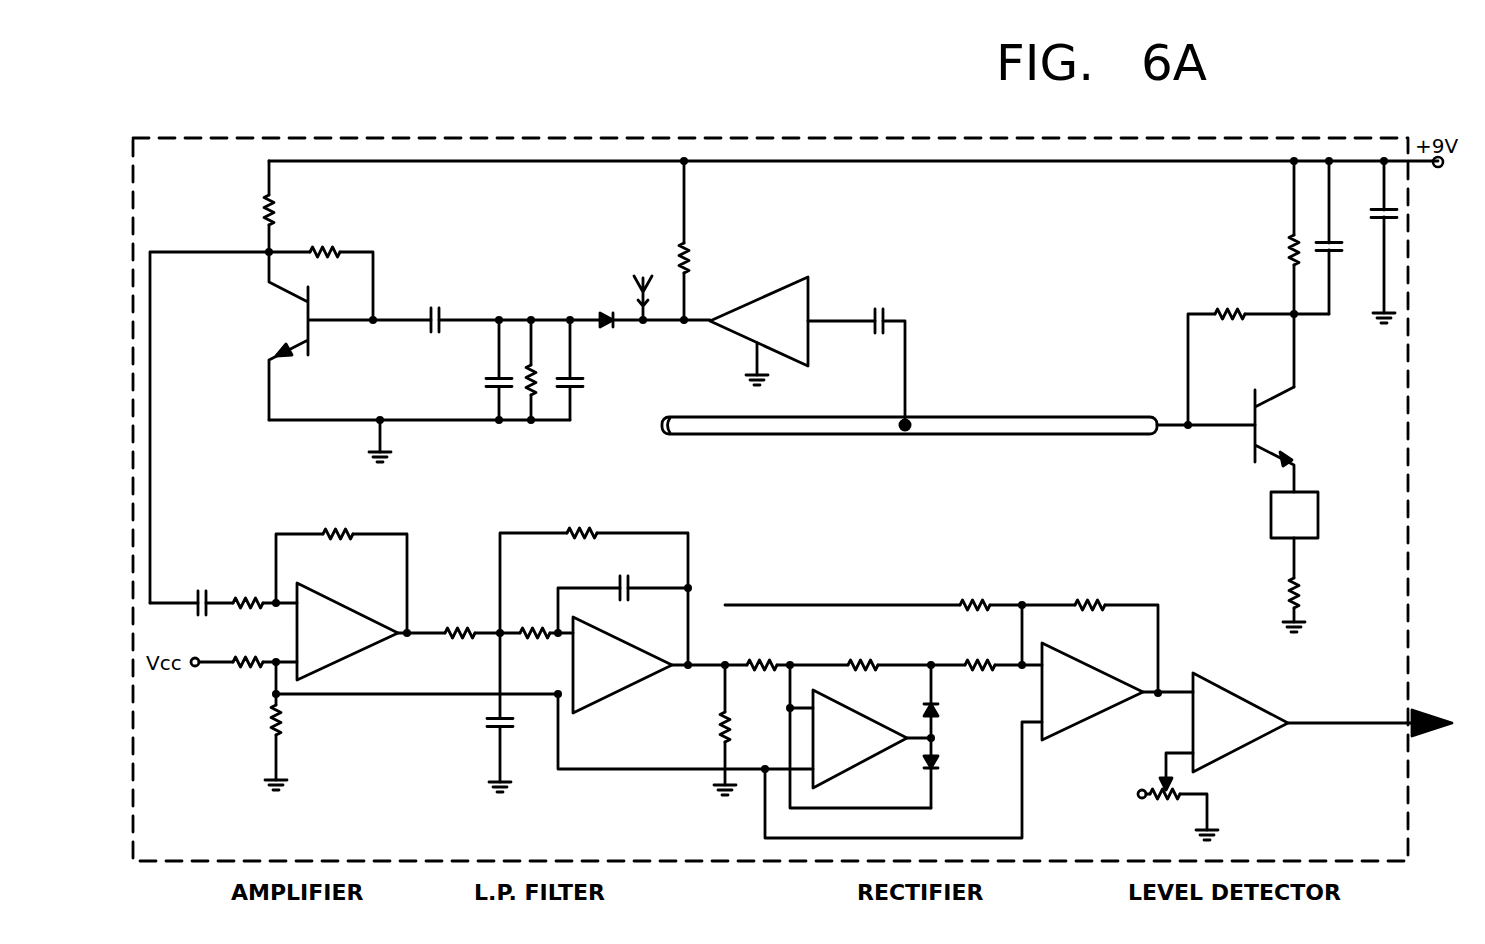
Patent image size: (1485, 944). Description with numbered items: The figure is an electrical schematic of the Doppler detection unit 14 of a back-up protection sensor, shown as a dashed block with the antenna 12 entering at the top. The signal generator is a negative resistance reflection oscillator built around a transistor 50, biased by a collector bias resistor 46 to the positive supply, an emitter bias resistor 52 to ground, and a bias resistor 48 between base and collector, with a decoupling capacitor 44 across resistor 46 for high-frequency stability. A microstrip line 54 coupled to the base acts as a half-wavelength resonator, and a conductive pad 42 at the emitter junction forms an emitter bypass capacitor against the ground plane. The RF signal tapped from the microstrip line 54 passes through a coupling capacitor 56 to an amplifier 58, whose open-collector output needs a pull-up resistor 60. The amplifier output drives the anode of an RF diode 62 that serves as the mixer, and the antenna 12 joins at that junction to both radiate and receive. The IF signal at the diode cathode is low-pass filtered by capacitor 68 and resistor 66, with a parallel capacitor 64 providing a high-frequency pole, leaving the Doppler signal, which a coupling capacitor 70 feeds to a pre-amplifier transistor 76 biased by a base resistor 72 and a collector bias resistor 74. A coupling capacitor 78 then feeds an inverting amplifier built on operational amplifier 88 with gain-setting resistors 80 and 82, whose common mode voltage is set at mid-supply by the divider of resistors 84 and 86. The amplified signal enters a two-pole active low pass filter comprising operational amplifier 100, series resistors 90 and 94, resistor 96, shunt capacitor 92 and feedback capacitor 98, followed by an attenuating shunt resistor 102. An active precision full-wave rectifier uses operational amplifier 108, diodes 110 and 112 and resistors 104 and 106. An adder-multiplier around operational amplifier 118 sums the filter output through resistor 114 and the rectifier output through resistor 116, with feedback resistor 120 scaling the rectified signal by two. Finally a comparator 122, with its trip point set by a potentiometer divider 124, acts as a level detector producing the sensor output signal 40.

The antenna 12 is at (640, 280).
The Doppler detection unit 14 is at (1410, 370).
The sensor output signal 40 is at (1315, 722).
The pad 42 is at (1275, 523).
The decoupling capacitor 44 is at (1337, 250).
The collector bias resistor 46 is at (1290, 253).
The bias resistor 48 is at (1228, 305).
The transistor 50 is at (1252, 452).
The emitter bias resistor 52 is at (1292, 592).
The microstrip line 54 is at (930, 430).
The coupling capacitor 56 is at (886, 314).
The amplifier 58 is at (782, 297).
The pull-up resistor 60 is at (692, 265).
The RF diode 62 is at (607, 310).
The capacitor 64 is at (576, 392).
The resistor 66 is at (528, 392).
The capacitor 68 is at (490, 395).
The coupling capacitor 70 is at (442, 312).
The base resistor 72 is at (322, 248).
The collector bias resistor 74 is at (266, 212).
The transistor 76 is at (312, 352).
The coupling capacitor 78 is at (200, 590).
The resistor 80 is at (248, 592).
The resistor 82 is at (333, 530).
The resistor 84 is at (252, 670).
The resistor 86 is at (285, 715).
The operational amplifier 88 is at (360, 645).
The resistor 90 is at (458, 627).
The shunt capacitor 92 is at (496, 718).
The resistor 94 is at (535, 627).
The resistor 96 is at (582, 530).
The capacitor 98 is at (630, 590).
The operational amplifier 100 is at (645, 672).
The shunt resistor 102 is at (722, 720).
The resistor 104 is at (760, 660).
The resistor 106 is at (860, 660).
The operational amplifier 108 is at (845, 765).
The diode 110 is at (940, 765).
The diode 112 is at (940, 712).
The resistor 114 is at (968, 600).
The resistor 116 is at (978, 672).
The operational amplifier 118 is at (1105, 745).
The resistor 120 is at (1085, 600).
The comparator circuit 122 is at (1237, 735).
The resistor voltage divider 124 is at (1160, 800).